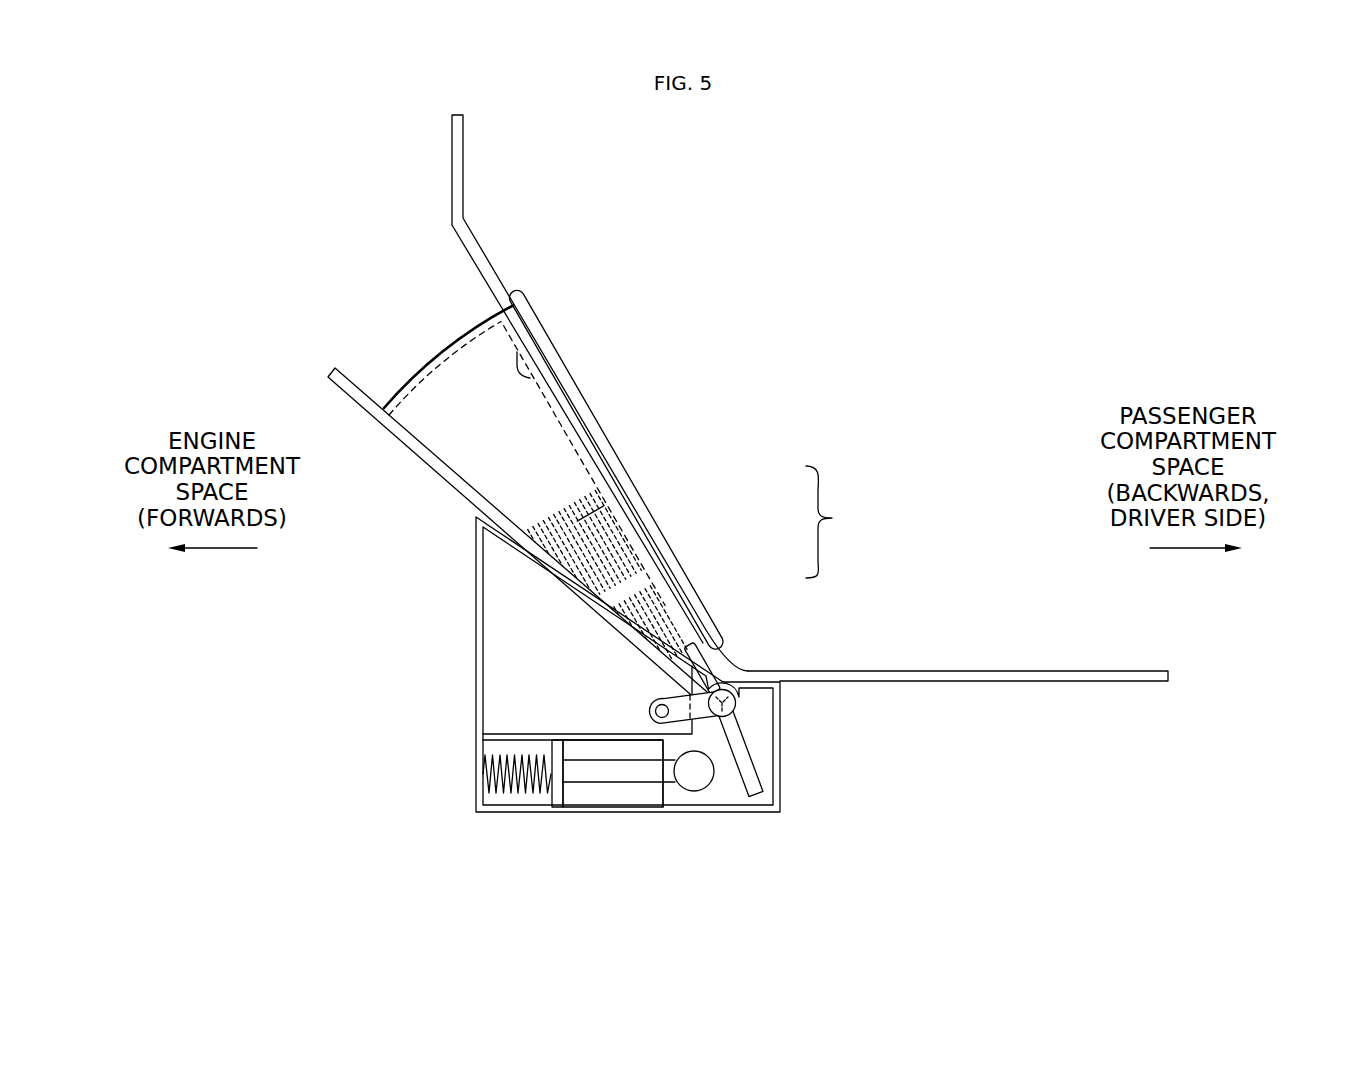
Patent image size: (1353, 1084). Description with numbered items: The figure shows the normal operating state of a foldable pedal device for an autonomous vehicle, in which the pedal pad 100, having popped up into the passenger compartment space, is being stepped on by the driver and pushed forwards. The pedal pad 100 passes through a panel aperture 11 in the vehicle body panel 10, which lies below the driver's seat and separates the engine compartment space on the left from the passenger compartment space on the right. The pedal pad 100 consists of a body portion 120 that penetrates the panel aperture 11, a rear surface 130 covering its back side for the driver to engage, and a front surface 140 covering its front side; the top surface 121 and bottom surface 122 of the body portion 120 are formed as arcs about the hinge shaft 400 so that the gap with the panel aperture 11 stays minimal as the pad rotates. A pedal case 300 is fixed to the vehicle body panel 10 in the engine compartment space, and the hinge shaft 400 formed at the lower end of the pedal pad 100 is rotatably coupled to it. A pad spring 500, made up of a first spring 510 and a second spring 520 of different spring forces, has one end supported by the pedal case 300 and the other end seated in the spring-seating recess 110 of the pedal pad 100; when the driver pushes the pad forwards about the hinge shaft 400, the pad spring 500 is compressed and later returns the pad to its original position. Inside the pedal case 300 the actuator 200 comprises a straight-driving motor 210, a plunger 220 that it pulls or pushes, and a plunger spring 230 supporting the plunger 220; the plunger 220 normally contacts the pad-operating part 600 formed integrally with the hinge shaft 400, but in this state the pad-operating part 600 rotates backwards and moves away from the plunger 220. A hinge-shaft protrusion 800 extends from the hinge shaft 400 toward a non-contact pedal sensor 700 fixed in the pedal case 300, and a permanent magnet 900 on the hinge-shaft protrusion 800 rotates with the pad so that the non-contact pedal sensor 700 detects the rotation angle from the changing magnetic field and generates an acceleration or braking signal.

The vehicle body panel 10 is at (1020, 671).
The panel aperture 11 is at (512, 312).
The pedal pad 100 is at (436, 336).
The spring-seating recess 110 is at (540, 347).
The body portion 120 is at (560, 420).
The top surface 121 is at (420, 368).
The bottom surface 122 is at (718, 668).
The rear surface 130 is at (536, 330).
The front surface 140 is at (332, 380).
The actuator 200 is at (603, 806).
The straight-driving motor 210 is at (578, 795).
The plunger 220 is at (642, 770).
The plunger spring 230 is at (513, 795).
The pedal case 300 is at (476, 577).
The hinge shaft 400 is at (738, 699).
The pad spring 500 is at (705, 566).
The first spring 510 is at (627, 503).
The second spring 520 is at (660, 604).
The pad-operating part 600 is at (757, 767).
The non-contact pedal sensor 700 is at (515, 639).
The hinge-shaft protrusion 800 is at (700, 752).
The permanent magnet 900 is at (652, 712).